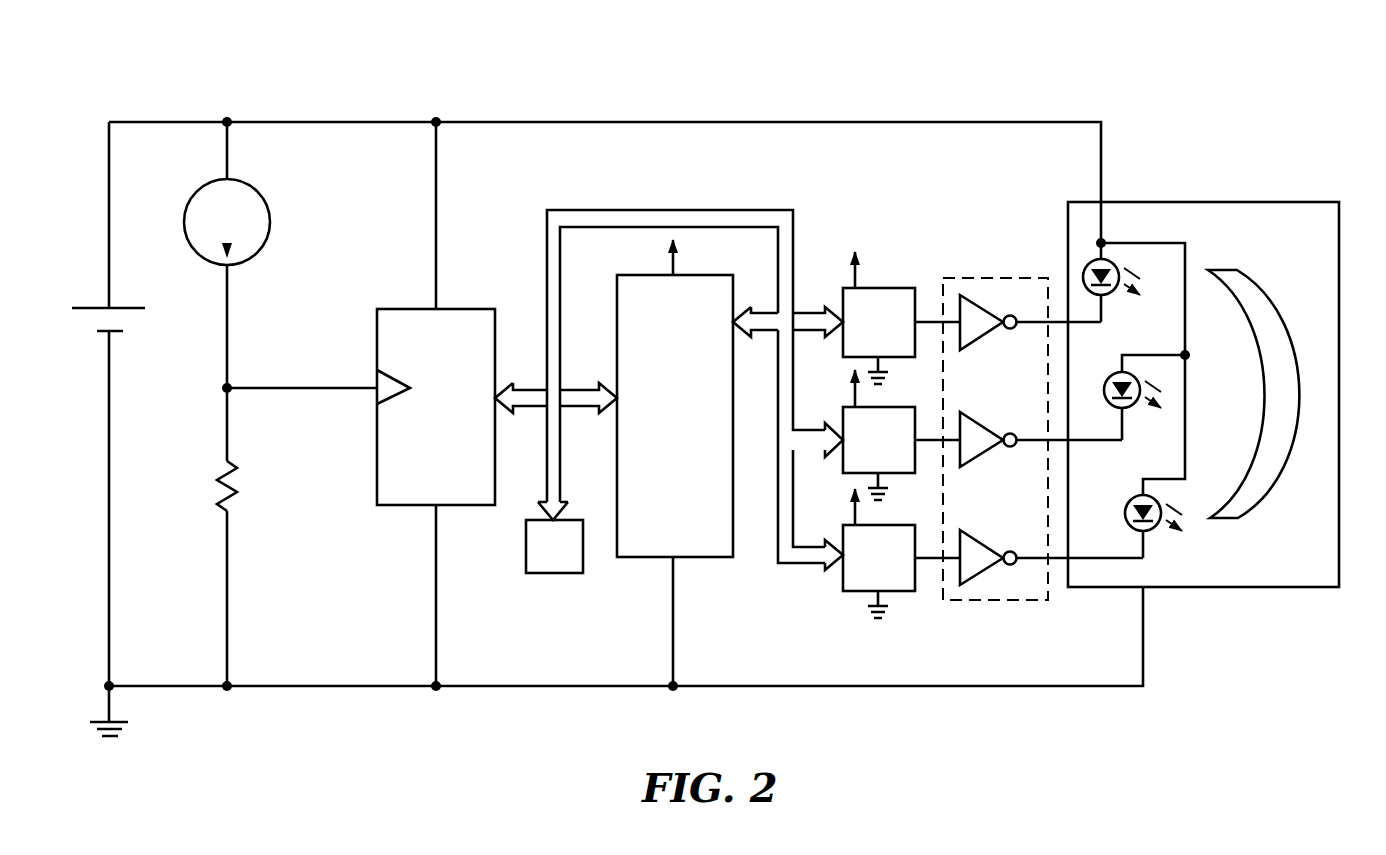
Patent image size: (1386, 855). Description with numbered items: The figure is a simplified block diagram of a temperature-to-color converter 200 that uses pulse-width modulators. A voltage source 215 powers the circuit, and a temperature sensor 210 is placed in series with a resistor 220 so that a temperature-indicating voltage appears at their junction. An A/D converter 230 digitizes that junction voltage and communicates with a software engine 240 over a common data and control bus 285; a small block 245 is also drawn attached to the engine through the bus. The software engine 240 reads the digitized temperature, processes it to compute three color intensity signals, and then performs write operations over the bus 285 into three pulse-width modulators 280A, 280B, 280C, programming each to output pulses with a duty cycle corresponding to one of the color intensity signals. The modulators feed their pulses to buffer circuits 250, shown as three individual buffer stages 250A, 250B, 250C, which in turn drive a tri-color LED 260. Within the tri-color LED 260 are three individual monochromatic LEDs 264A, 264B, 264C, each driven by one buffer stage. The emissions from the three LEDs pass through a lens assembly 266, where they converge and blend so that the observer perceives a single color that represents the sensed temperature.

The temperature-to-color converter 200 is at (947, 68).
The temperature sensor 210 is at (255, 222).
The voltage source 215 is at (132, 323).
The resistor 220 is at (237, 490).
The A/D converter 230 is at (414, 354).
The software engine 240 is at (651, 321).
The memory 245 is at (534, 560).
The buffer circuits 250 is at (968, 277).
The driver A (inverter) 250A is at (987, 300).
The driver B (inverter) 250B is at (998, 420).
The driver C (inverter) 250C is at (998, 532).
The tri-color LED 260 is at (1200, 190).
The light emitting diode A 264A is at (1083, 263).
The light emitting diode B 264B is at (1113, 406).
The light emitting diode C 264C is at (1155, 528).
The lens assembly 266 is at (1250, 297).
The pulse-width modulator 280A is at (852, 335).
The pulse-width modulator 280B is at (852, 453).
The pulse-width modulator 280C is at (852, 571).
The common data and control bus 285 is at (712, 210).